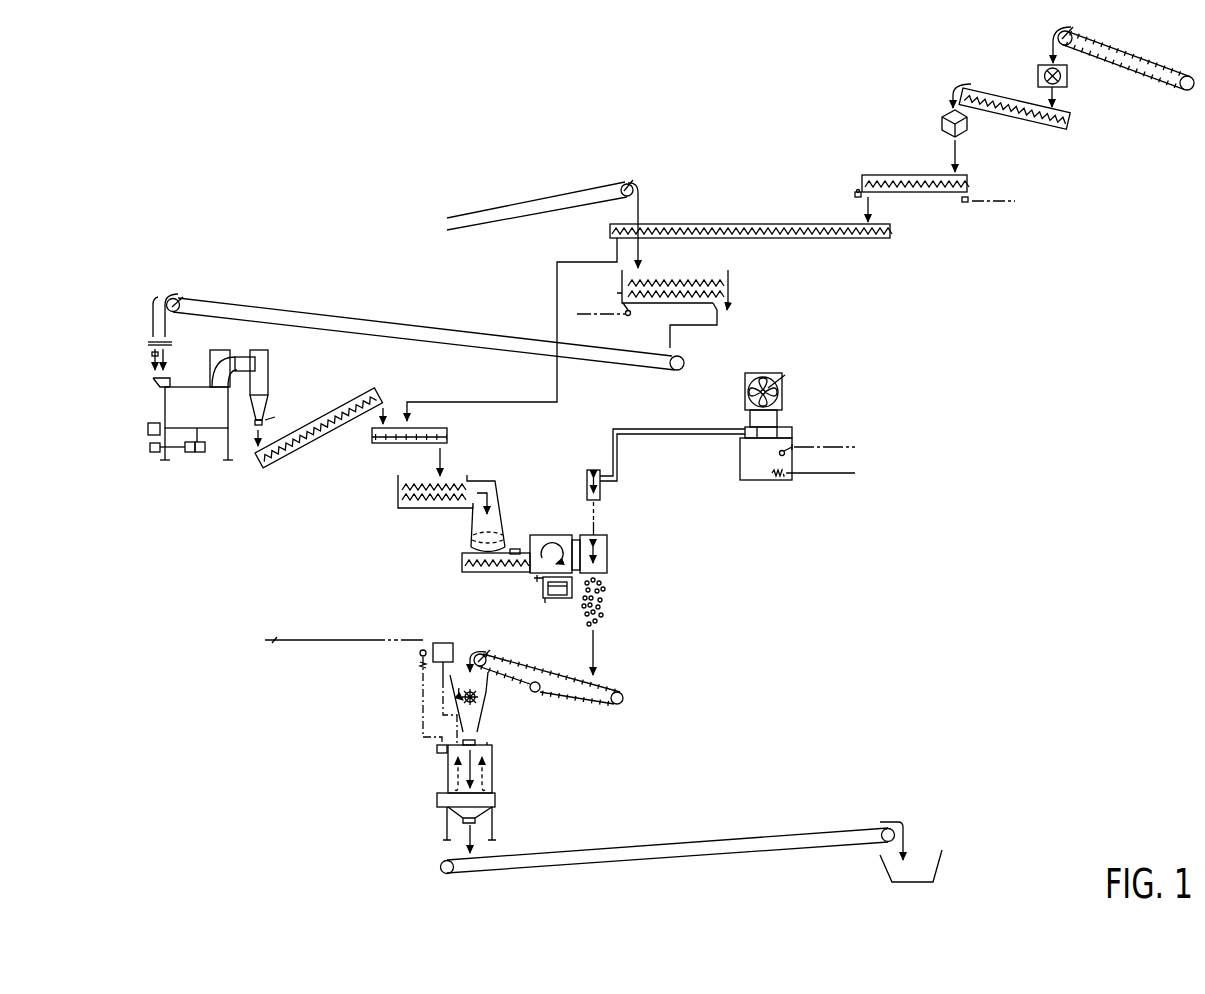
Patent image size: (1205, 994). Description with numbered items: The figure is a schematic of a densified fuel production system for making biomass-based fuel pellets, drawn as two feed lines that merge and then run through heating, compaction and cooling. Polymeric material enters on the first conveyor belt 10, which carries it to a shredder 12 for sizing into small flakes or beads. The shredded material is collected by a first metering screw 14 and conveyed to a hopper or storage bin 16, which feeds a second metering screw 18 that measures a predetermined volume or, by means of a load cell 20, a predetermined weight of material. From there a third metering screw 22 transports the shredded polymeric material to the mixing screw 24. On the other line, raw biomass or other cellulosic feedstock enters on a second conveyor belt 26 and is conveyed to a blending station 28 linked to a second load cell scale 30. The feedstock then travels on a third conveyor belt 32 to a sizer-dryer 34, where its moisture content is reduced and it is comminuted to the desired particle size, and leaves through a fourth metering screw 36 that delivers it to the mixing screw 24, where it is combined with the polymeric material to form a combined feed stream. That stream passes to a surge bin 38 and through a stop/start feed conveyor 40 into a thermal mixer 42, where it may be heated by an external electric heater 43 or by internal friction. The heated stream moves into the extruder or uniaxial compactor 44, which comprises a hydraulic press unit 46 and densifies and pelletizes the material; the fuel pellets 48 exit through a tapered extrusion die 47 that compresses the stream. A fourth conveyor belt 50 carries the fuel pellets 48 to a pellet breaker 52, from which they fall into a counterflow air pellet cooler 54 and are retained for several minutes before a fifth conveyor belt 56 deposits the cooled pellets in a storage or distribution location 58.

The first conveyor belt 10 is at (1175, 92).
The shredder 12 is at (1036, 72).
The first metering screw 14 is at (1055, 132).
The storage bin 16 is at (941, 108).
The second metering screw 18 is at (938, 198).
The load cell 20 is at (972, 206).
The third metering screw 22 is at (887, 242).
The mixing screw 24 is at (451, 432).
The second conveyor belt 26 is at (483, 227).
The blending station 28 is at (734, 287).
The second load cell scale 30 is at (640, 317).
The third conveyor belt 32 is at (349, 334).
The sizer-dryer 34 is at (213, 463).
The fourth metering screw 36 is at (292, 460).
The surge bin 38 is at (396, 490).
The stop/start feed conveyor 40 is at (460, 560).
The thermal mixer 42 is at (550, 532).
The electric heater 43 is at (553, 606).
The uniaxial compactor 44 is at (611, 543).
The hydraulic press unit 46 is at (590, 468).
The tapered extrusion die 47 is at (609, 578).
The fuel pellets 48 is at (608, 608).
The fourth conveyor belt 50 is at (628, 703).
The pellet breaker 52 is at (455, 698).
The counterflow air pellet cooler 54 is at (446, 773).
The fifth conveyor belt 56 is at (717, 859).
The storage or distribution location 58 is at (943, 870).